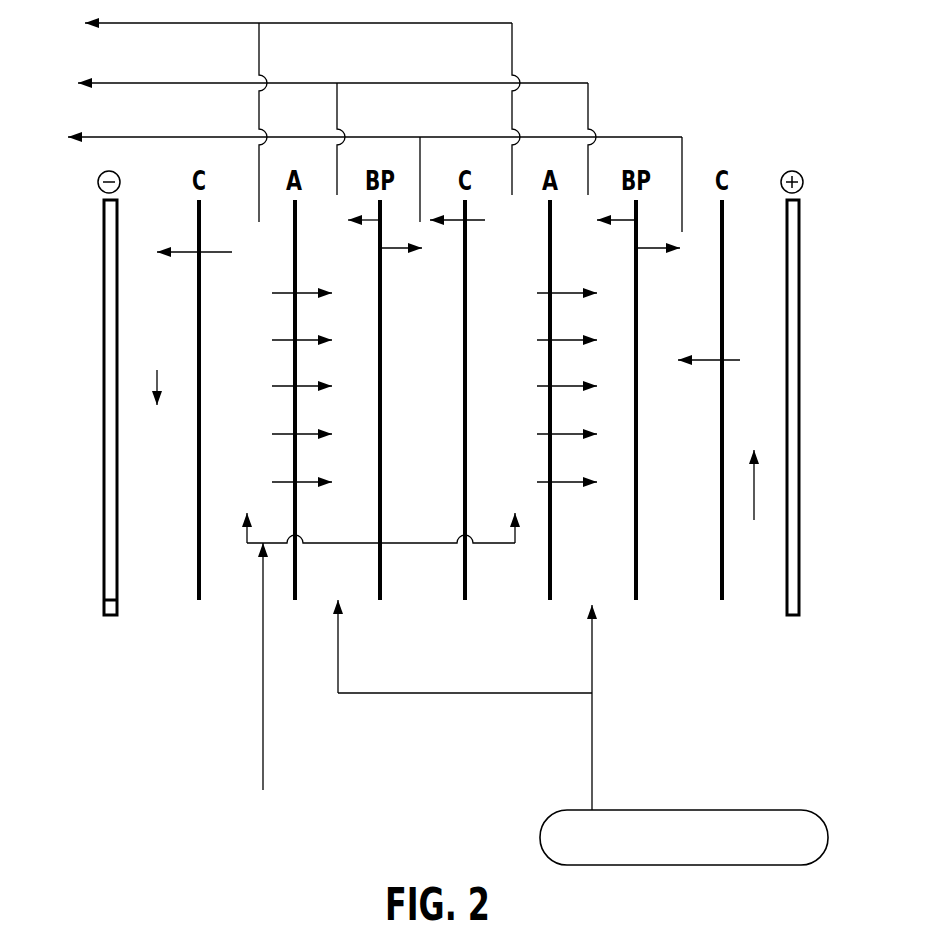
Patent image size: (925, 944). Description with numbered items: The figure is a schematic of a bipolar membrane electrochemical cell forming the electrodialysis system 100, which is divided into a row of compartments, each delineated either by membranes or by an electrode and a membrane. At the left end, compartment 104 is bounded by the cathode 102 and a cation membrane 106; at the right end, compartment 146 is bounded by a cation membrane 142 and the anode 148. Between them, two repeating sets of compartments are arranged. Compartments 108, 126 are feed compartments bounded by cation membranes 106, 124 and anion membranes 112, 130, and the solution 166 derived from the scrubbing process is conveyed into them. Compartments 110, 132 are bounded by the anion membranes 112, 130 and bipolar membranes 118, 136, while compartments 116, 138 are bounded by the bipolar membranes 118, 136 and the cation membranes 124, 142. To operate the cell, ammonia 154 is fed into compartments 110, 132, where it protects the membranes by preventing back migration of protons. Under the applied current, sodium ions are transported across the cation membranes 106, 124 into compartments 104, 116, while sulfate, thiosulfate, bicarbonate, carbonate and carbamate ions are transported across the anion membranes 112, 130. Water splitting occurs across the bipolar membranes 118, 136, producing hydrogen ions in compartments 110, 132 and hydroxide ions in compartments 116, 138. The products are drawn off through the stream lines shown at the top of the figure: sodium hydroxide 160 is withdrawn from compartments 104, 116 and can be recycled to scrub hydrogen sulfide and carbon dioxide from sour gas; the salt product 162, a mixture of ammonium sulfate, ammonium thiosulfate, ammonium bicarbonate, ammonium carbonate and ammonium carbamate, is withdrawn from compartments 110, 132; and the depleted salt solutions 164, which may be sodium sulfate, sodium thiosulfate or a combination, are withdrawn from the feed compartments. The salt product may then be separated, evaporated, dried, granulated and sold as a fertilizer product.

The electrodialysis system 100 is at (106, 601).
The cathode 102 is at (104, 455).
The compartment 104 is at (139, 585).
The cation membrane 106 is at (199, 593).
The compartment 108 is at (224, 583).
The compartment 110 is at (312, 603).
The anion membrane 112 is at (298, 580).
The compartment 116 is at (414, 583).
The bipolar membrane 118 is at (383, 592).
The cation membrane 124 is at (466, 593).
The compartment 126 is at (512, 583).
The anion membrane 130 is at (553, 560).
The compartment 132 is at (620, 593).
The bipolar membrane 136 is at (637, 593).
The compartment 138 is at (682, 583).
The cation membrane 142 is at (723, 598).
The compartment 146 is at (757, 588).
The anode 148 is at (800, 597).
The ammonia 154 is at (592, 757).
The sodium hydroxide 160 is at (112, 137).
The salt product 162 is at (590, 165).
The depleted salt solutions 164 is at (512, 55).
The solution 166 is at (263, 740).